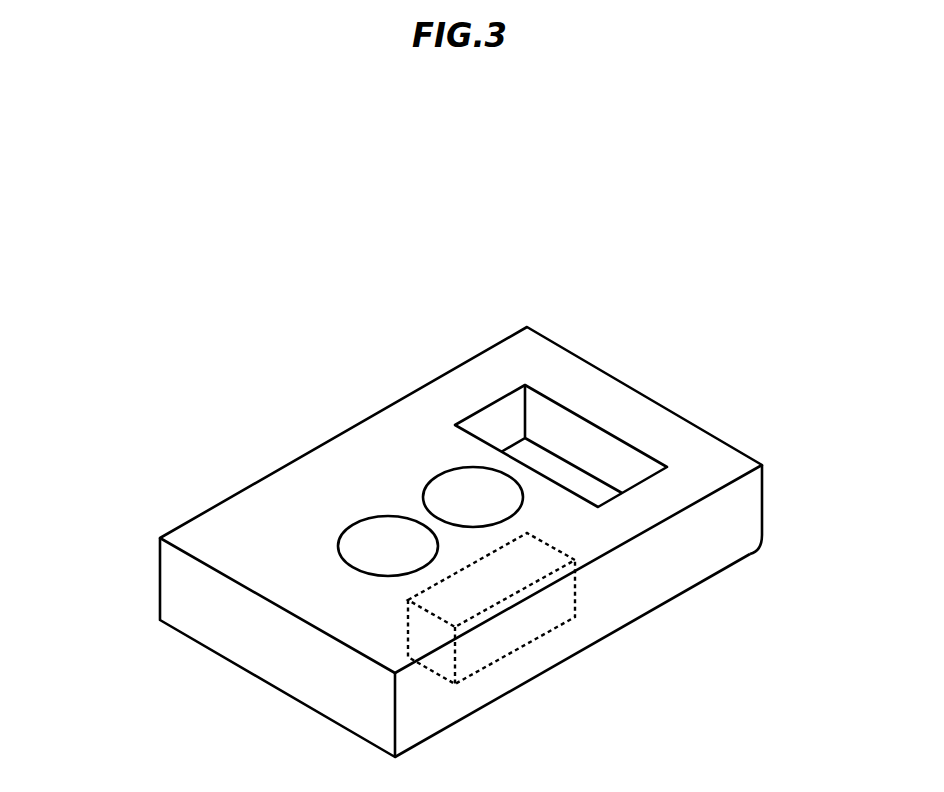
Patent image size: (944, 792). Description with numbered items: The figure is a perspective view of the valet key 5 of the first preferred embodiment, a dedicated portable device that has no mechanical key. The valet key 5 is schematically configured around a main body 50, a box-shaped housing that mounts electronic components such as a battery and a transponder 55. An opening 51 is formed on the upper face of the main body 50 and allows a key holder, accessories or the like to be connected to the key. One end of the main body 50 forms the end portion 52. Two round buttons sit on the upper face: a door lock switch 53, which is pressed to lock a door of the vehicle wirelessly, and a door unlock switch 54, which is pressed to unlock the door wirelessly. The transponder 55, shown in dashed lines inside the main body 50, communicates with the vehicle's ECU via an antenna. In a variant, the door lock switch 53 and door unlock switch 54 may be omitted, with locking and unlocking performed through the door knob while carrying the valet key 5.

The valet key 5 is at (464, 519).
The main body 50 is at (305, 677).
The opening 51 is at (587, 417).
The end portion 52 is at (762, 507).
The door lock switch 53 is at (370, 530).
The door unlock switch 54 is at (455, 482).
The transponder 55 is at (537, 637).